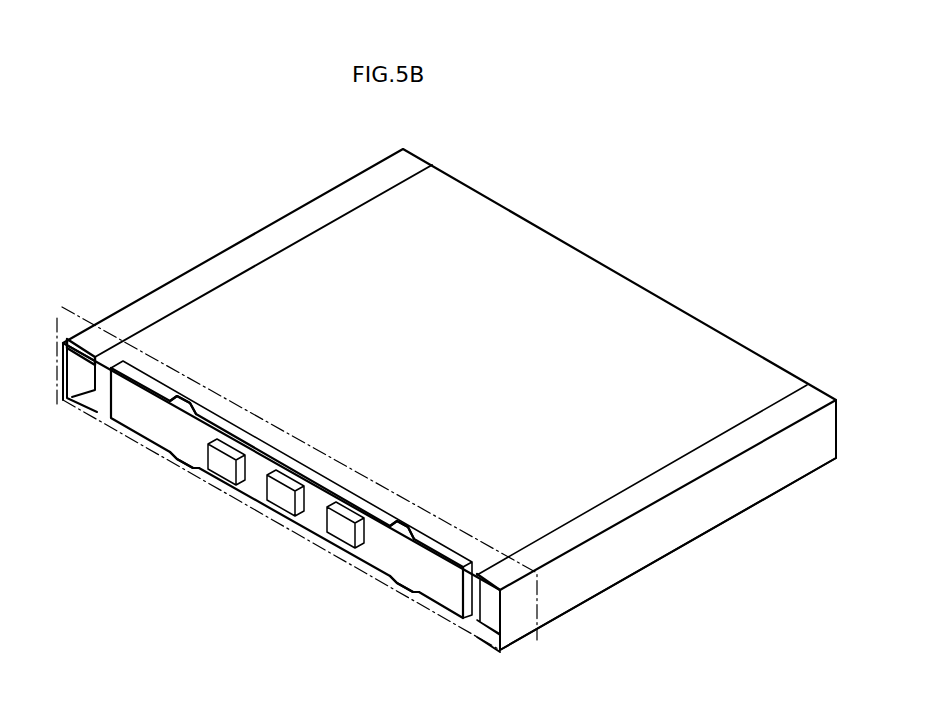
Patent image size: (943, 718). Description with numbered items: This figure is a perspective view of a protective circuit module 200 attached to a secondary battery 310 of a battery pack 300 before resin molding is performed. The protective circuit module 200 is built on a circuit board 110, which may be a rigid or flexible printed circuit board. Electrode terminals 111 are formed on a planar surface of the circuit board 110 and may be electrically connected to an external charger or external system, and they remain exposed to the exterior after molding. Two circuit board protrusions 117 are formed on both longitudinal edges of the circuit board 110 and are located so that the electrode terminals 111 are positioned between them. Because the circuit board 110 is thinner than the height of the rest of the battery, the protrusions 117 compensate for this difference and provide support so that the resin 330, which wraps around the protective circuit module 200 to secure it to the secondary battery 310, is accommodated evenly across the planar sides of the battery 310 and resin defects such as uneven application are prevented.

The battery pack 300 is at (446, 431).
The secondary battery 310 is at (530, 226).
The resin 330 is at (453, 630).
The protective circuit module 200 is at (251, 506).
The circuit board 110 is at (438, 596).
The electrode terminals 111 is at (336, 523).
The circuit board protrusions 117 is at (189, 398).